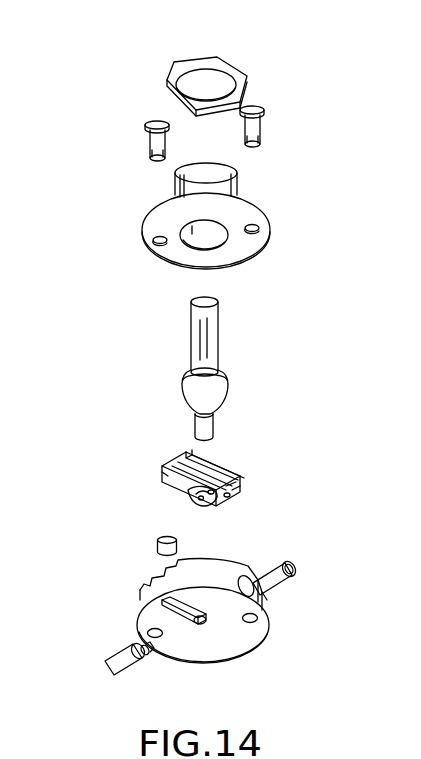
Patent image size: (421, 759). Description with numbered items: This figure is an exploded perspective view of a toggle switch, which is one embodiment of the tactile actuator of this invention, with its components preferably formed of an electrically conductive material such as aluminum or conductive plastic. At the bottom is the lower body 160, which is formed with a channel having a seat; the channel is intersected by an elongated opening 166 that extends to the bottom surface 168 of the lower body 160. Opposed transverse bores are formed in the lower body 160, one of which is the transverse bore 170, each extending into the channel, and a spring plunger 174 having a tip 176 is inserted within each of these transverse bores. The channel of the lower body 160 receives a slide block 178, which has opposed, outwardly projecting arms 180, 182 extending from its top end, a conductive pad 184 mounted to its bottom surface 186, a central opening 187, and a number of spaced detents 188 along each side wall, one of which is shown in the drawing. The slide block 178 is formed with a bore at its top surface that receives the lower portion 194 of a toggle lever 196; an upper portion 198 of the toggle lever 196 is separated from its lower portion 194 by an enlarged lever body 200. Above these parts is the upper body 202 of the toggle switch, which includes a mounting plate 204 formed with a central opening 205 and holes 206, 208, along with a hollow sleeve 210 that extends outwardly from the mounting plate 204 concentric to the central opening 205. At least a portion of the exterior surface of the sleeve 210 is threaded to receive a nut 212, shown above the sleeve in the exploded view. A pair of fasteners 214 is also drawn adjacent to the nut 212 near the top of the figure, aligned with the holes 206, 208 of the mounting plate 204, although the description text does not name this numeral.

The lower body 160 is at (102, 600).
The elongated opening 166 is at (181, 634).
The bottom surface 168 is at (244, 638).
The transverse bore 170 is at (221, 594).
The spring plunger 174 is at (102, 664).
The tip 176 is at (158, 648).
The slide block 178 is at (140, 489).
The arm 180 is at (162, 468).
The arm 182 is at (228, 474).
The conductive pad 184 is at (160, 544).
The bottom surface 186 is at (176, 490).
The central opening 187 is at (202, 500).
The detents 188 is at (220, 480).
The lower portion 194 is at (198, 426).
The toggle lever 196 is at (252, 350).
The upper portion 198 is at (191, 340).
The enlarged lever body 200 is at (224, 388).
The upper body 202 is at (302, 203).
The mounting plate 204 is at (144, 222).
The central opening 205 is at (205, 238).
The hole 206 is at (158, 243).
The hole 208 is at (258, 232).
The hollow sleeve 210 is at (236, 172).
The nut 212 is at (232, 66).
The screw 214 is at (153, 120).